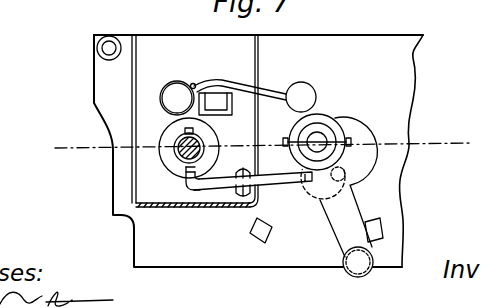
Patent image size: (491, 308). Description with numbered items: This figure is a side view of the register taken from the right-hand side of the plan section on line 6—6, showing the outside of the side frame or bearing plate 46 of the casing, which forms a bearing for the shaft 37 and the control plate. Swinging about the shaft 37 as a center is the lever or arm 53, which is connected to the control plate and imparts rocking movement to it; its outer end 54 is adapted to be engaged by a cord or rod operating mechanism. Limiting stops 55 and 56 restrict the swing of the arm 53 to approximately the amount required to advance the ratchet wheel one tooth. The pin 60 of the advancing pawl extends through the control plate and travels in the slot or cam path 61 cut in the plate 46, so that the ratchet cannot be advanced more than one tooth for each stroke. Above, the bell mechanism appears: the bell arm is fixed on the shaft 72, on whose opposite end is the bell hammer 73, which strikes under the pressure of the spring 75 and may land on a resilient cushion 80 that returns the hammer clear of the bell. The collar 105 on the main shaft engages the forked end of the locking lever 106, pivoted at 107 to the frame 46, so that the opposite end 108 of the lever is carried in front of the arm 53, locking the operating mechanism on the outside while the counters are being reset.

The side frame or bearing plate 46 is at (402, 77).
The section line 6— 6 is at (452, 121).
The spring 75 is at (159, 100).
The shaft 72 is at (176, 90).
The bell hammer 73 is at (310, 94).
The resilient cushion 80 is at (220, 108).
The shaft 37 is at (320, 140).
The collar 105 is at (166, 163).
The locking lever 106 is at (188, 189).
The pivot 107 is at (240, 195).
The opposite end of the locking lever 108 is at (299, 183).
The lever or arm 53 is at (350, 208).
The outer end of the arm 54 is at (343, 273).
The limiting stop 55 is at (384, 230).
The limiting stop 56 is at (255, 235).
The pin 60 is at (332, 177).
The slot or cam path 61 is at (346, 167).